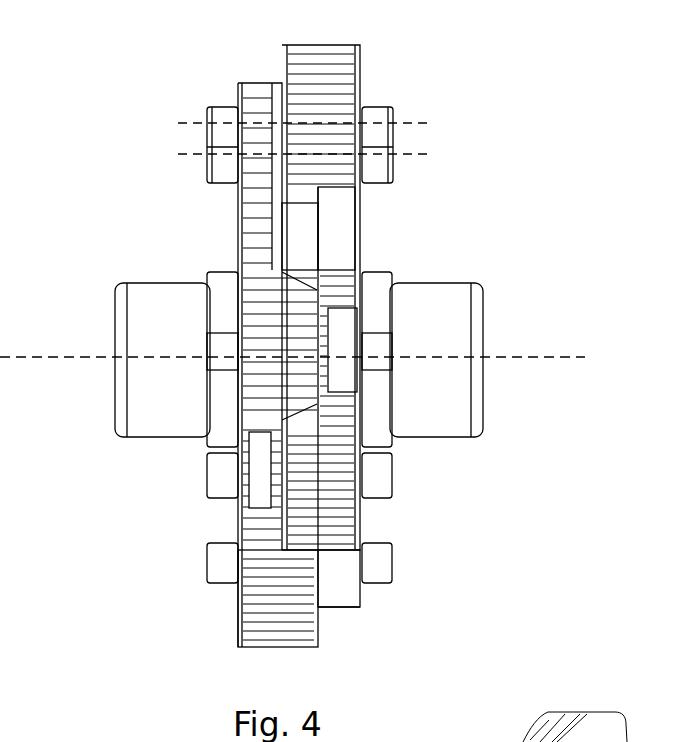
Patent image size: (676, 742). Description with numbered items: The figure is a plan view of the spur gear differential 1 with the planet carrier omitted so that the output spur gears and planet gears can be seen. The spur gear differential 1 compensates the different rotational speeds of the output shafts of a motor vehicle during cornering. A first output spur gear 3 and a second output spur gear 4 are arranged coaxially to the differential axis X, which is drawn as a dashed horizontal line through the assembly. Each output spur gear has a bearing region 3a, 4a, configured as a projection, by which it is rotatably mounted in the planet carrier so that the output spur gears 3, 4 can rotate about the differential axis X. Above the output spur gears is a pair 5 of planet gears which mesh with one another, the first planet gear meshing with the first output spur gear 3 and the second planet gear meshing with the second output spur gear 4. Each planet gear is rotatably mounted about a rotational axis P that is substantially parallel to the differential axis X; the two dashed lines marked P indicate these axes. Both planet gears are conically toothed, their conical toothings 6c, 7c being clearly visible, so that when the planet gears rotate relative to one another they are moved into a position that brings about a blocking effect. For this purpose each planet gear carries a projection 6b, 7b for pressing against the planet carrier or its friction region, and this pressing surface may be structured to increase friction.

The spur gear differential 1 is at (530, 88).
The first output spur gear 3 is at (252, 242).
The bearing region 3a is at (148, 412).
The second output spur gear 4 is at (345, 232).
The bearing region 4a is at (448, 412).
The pair of planet gears 5 is at (174, 146).
The projection 6b is at (343, 577).
The conical toothing 6c is at (273, 652).
The projection 7b is at (252, 493).
The conical toothing 7c is at (325, 553).
The rotational axis P is at (437, 126).
The differential axis X is at (565, 358).